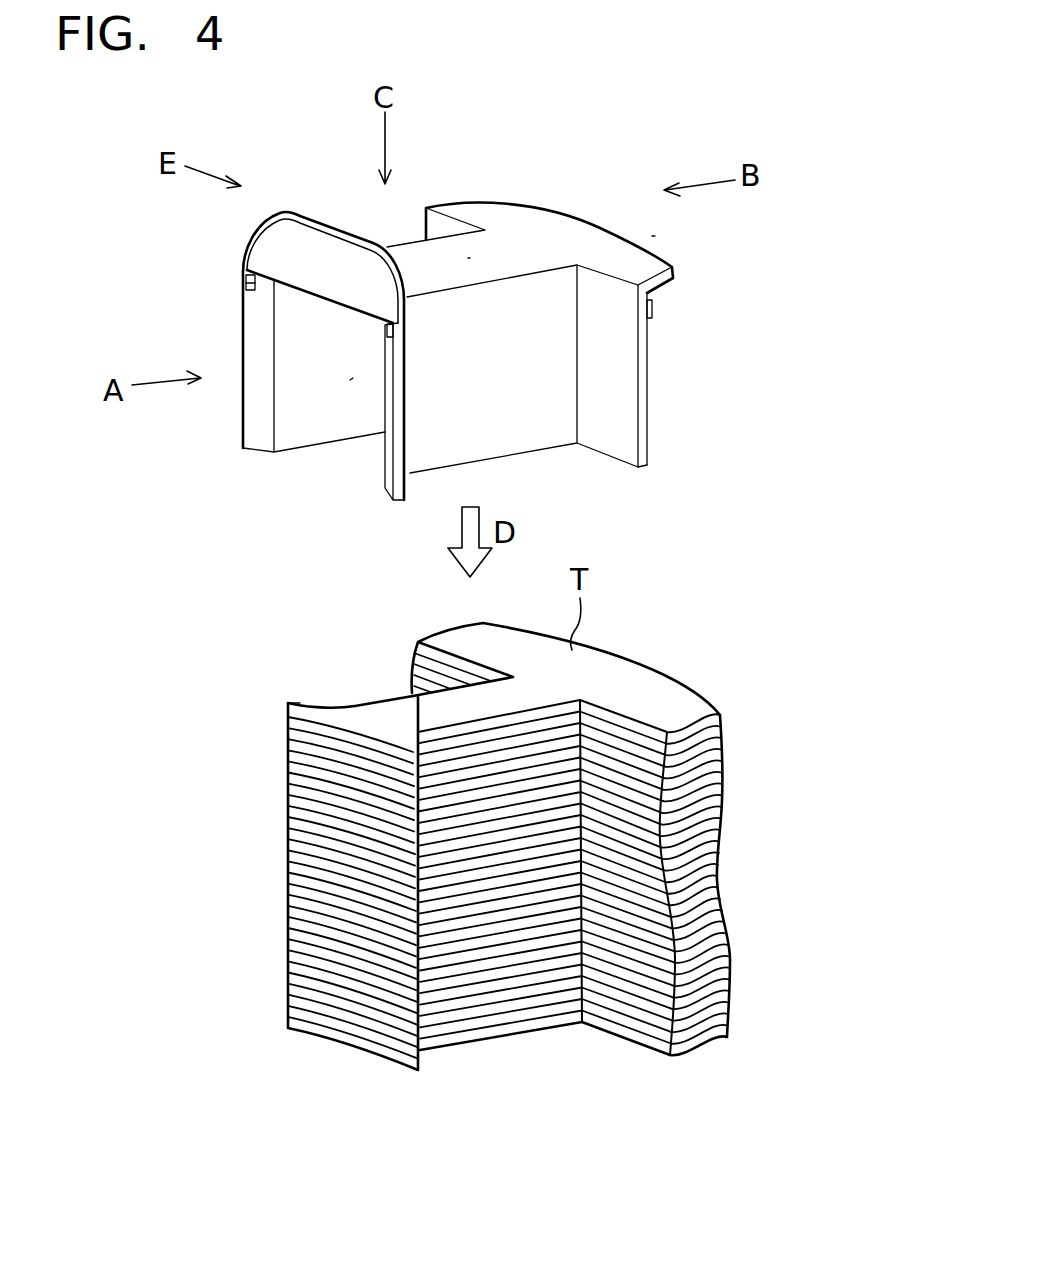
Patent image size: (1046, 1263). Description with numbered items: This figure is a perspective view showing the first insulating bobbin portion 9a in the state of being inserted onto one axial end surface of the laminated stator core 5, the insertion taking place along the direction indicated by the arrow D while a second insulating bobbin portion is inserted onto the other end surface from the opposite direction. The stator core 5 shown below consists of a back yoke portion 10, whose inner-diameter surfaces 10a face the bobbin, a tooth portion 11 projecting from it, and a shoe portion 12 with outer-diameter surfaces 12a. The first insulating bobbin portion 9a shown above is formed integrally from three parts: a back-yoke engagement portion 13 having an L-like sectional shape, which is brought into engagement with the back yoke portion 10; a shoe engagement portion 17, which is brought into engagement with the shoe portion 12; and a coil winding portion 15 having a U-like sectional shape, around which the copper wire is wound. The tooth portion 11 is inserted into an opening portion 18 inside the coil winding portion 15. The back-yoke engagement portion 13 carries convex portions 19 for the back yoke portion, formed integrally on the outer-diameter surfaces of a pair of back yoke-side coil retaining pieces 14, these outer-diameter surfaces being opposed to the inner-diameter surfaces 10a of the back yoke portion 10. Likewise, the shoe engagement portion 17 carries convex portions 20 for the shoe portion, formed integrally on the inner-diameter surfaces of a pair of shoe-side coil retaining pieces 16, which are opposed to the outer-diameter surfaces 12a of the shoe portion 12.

The stator core 5 is at (725, 775).
The first insulating bobbin portion 9a is at (652, 236).
The back yoke portion 10 is at (638, 678).
The inner-diameter surfaces of the back yoke portion 10a is at (657, 878).
The tooth portion 11 is at (415, 710).
The shoe portion 12 is at (340, 872).
The outer-diameter surfaces of the shoe portion 12a is at (313, 703).
The back-yoke engagement portion 13 is at (558, 233).
The back yoke-side coil retaining pieces 14 is at (443, 228).
The coil winding portion 15 is at (468, 258).
The shoe-side coil retaining pieces 16 is at (258, 400).
The shoe engagement portion 17 is at (293, 236).
The opening portion 18 is at (353, 378).
The convex portions for the back yoke portion 19 is at (655, 310).
The convex portions for the shoe portion 20 is at (246, 283).